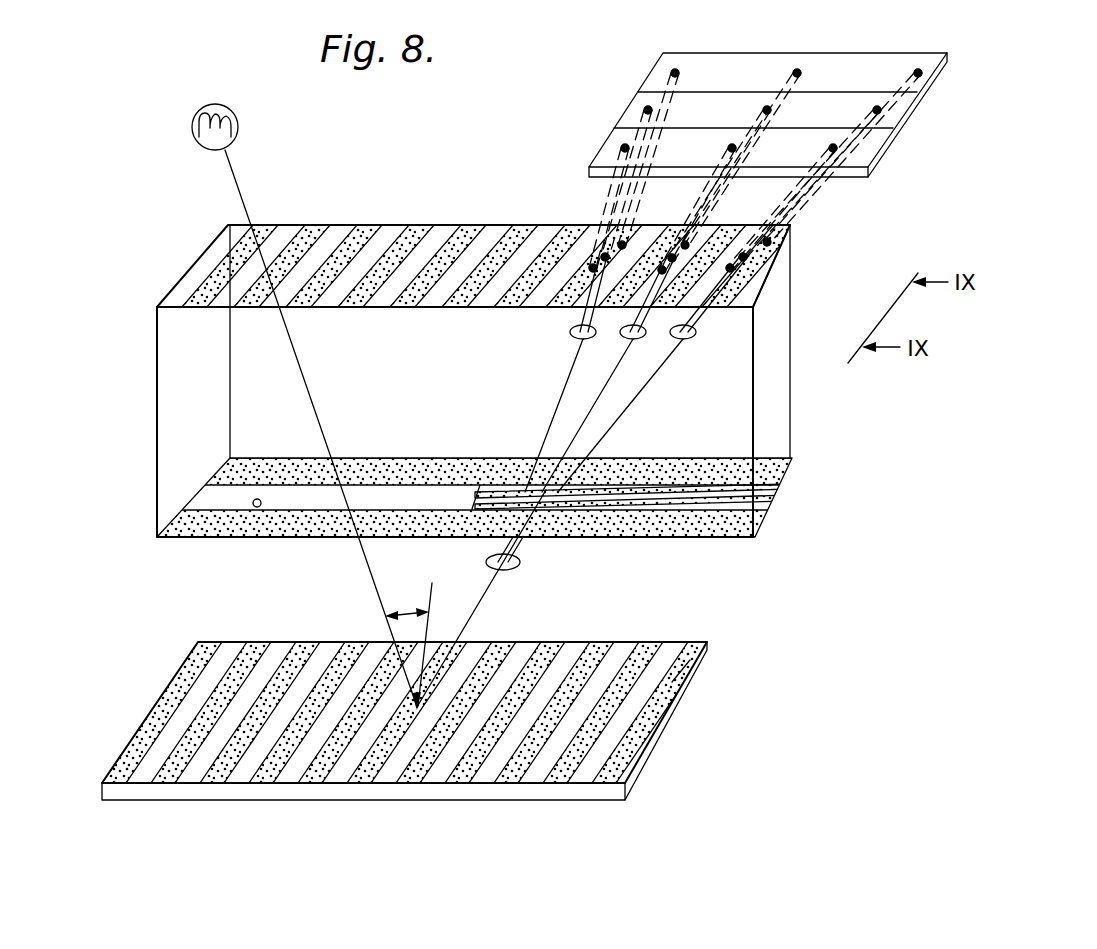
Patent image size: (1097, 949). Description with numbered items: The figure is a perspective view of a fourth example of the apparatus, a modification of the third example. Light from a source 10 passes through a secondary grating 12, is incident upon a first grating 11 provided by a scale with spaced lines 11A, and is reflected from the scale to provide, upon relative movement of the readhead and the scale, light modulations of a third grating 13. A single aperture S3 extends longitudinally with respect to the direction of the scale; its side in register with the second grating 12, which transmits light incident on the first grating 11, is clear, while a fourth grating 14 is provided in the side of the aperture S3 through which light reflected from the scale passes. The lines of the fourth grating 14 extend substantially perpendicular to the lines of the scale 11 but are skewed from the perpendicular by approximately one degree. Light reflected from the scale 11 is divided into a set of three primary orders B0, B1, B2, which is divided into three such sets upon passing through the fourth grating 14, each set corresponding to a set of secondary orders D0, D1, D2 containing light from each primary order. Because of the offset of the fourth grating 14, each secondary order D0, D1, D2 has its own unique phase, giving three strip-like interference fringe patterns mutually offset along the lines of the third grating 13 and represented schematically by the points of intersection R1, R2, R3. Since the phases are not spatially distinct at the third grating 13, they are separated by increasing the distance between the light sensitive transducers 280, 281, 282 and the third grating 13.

The light source 10 is at (238, 124).
The first grating 11 is at (170, 692).
The spaced lines of the first grating 11A is at (672, 682).
The secondary grating 12 is at (212, 248).
The third grating 13 is at (795, 232).
The fourth grating 14 is at (775, 490).
The light sensitive transducer 280 is at (610, 152).
The light sensitive transducer 281 is at (633, 117).
The light sensitive transducer 282 is at (655, 80).
The point of intersection R1 is at (593, 268).
The point of intersection R2 is at (605, 257).
The point of intersection R3 is at (622, 245).
The secondary order D0 is at (580, 316).
The secondary order D1 is at (585, 313).
The secondary order D2 is at (577, 338).
The primary order B0 is at (520, 545).
The primary order B1 is at (522, 556).
The primary order B2 is at (490, 545).
The aperture S3 is at (247, 515).